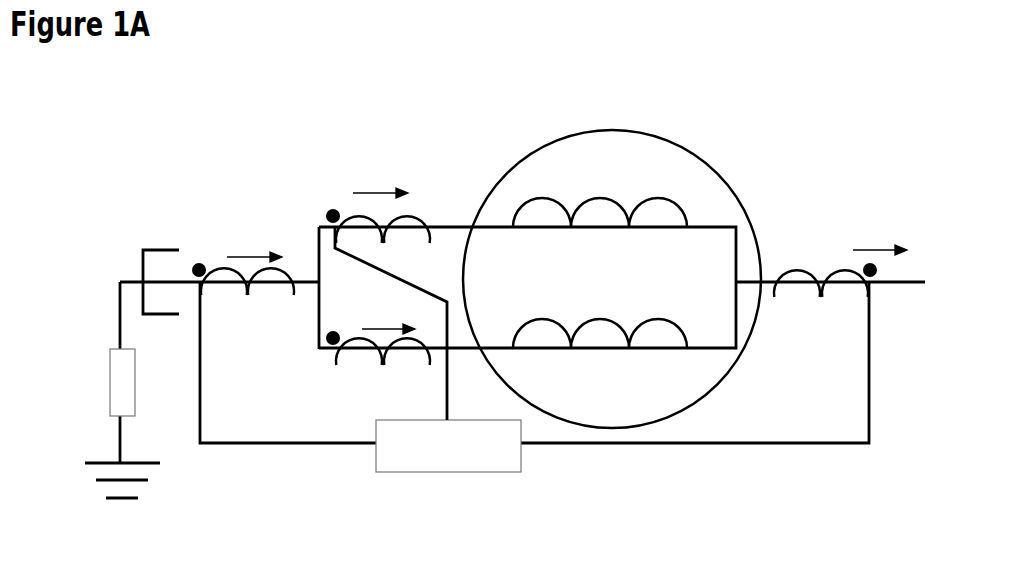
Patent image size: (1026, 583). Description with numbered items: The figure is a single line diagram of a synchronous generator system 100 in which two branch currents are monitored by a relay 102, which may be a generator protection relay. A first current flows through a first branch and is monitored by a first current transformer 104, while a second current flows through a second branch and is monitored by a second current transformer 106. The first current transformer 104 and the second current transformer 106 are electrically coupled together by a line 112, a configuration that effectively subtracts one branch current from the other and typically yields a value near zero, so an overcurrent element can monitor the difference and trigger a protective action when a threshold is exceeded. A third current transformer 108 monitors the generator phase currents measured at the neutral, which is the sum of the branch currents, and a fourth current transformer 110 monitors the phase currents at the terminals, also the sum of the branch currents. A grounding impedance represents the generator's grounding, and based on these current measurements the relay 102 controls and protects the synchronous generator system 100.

The synchronous generator system 100 is at (152, 135).
The relay 102 is at (448, 474).
The first current transformer 104 is at (425, 216).
The second current transformer 106 is at (447, 362).
The third current transformer 108 is at (295, 269).
The fourth current transformer 110 is at (803, 268).
The line 112 is at (383, 268).